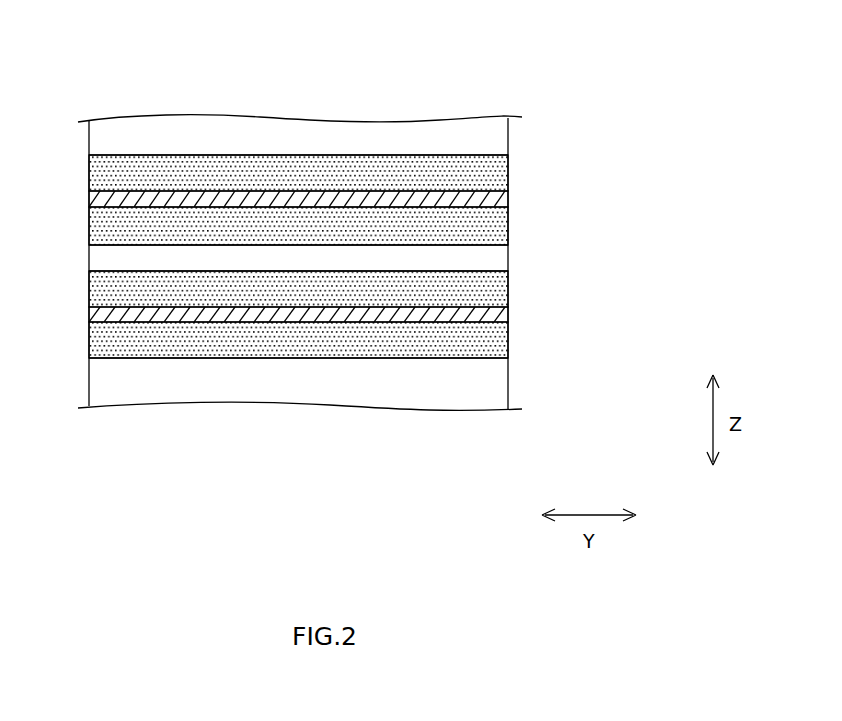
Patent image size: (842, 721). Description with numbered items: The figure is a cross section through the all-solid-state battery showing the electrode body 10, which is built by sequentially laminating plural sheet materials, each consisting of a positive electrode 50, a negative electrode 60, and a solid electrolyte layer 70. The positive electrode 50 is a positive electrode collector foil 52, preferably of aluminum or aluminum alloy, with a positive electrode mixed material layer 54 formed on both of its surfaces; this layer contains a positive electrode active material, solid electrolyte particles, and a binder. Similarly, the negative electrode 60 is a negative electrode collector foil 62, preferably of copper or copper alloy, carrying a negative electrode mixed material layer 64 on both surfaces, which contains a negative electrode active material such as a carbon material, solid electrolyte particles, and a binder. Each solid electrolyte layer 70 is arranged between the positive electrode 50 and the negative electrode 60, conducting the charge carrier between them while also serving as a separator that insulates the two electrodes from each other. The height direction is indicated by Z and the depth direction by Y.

The electrode body 10 is at (473, 70).
The solid electrolyte layer 70 is at (508, 132).
The positive electrode 50 is at (602, 160).
The positive electrode mixed material layer 54 is at (508, 170).
The positive electrode collector foil 52 is at (508, 198).
The negative electrode 60 is at (602, 282).
The negative electrode mixed material layer 64 is at (508, 290).
The negative electrode collector foil 62 is at (508, 318).